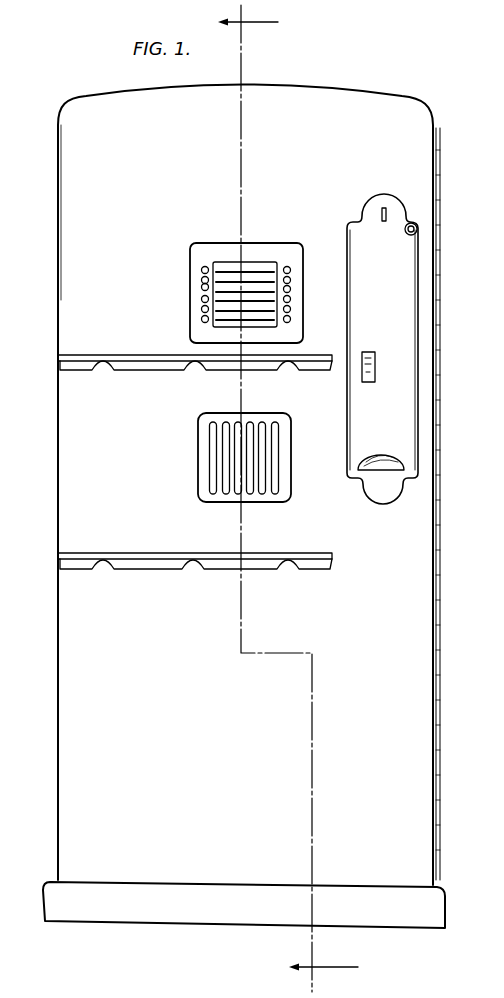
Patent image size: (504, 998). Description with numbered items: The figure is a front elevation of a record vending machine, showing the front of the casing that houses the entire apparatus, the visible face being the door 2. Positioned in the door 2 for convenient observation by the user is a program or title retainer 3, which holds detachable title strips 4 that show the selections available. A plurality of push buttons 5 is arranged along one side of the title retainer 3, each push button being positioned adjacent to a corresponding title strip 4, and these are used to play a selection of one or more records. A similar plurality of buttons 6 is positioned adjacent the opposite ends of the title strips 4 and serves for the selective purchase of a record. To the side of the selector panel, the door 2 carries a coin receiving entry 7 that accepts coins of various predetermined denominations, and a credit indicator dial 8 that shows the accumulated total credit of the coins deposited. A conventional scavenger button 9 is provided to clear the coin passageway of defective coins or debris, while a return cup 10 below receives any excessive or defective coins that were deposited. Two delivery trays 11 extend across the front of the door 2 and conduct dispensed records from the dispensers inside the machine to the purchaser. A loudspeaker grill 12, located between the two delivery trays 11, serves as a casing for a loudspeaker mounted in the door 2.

The door 2 is at (56, 676).
The program or title retainer 3 is at (190, 327).
The detachable title strips 4 is at (243, 268).
The push buttons 5 is at (138, 262).
The buttons 6 is at (290, 281).
The coin receiving entry 7 is at (390, 204).
The credit indicator dial 8 is at (376, 358).
The scavenger button 9 is at (422, 228).
The return cup 10 is at (390, 456).
The delivery trays 11 is at (207, 363).
The loudspeaker grill 12 is at (198, 441).